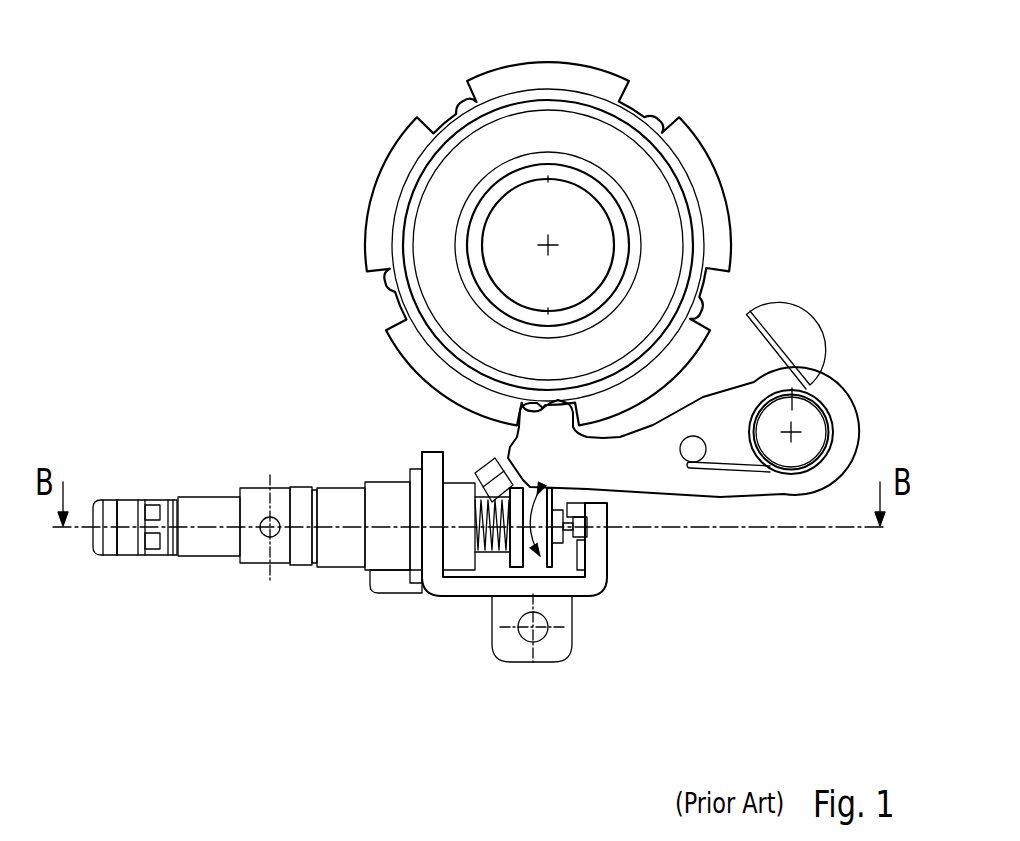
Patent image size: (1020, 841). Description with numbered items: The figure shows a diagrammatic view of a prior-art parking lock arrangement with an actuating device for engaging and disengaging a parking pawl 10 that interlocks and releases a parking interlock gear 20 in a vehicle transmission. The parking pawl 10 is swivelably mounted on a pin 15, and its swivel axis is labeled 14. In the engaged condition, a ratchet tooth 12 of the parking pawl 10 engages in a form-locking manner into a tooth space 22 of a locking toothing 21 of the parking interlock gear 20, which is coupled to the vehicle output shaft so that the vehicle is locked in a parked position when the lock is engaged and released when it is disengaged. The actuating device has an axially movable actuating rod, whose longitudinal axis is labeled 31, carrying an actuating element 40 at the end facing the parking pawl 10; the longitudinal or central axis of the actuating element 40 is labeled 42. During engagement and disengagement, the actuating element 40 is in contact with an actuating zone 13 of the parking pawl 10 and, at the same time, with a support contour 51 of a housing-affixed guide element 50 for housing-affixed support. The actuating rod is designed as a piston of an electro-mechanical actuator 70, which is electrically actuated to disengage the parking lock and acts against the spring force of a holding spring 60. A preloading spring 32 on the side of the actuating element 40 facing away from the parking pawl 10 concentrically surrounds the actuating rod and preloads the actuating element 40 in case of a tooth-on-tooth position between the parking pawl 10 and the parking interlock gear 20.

The parking pawl 10 is at (730, 413).
The ratchet tooth 12 is at (543, 425).
The actuating zone 13 is at (475, 508).
The swivel axis 14 is at (790, 437).
The pin 15 is at (794, 366).
The parking interlock gear 20 is at (683, 135).
The locking toothing 21 is at (718, 153).
The tooth space 22 is at (722, 290).
The longitudinal axis 31 is at (850, 530).
The preloading spring 32 is at (497, 553).
The actuating element 40 is at (533, 550).
The central axis 42 is at (850, 530).
The guide element 50 is at (593, 578).
The support contour 51 is at (575, 492).
The holding spring 60 is at (755, 330).
The electro-mechanical actuator 70 is at (256, 585).